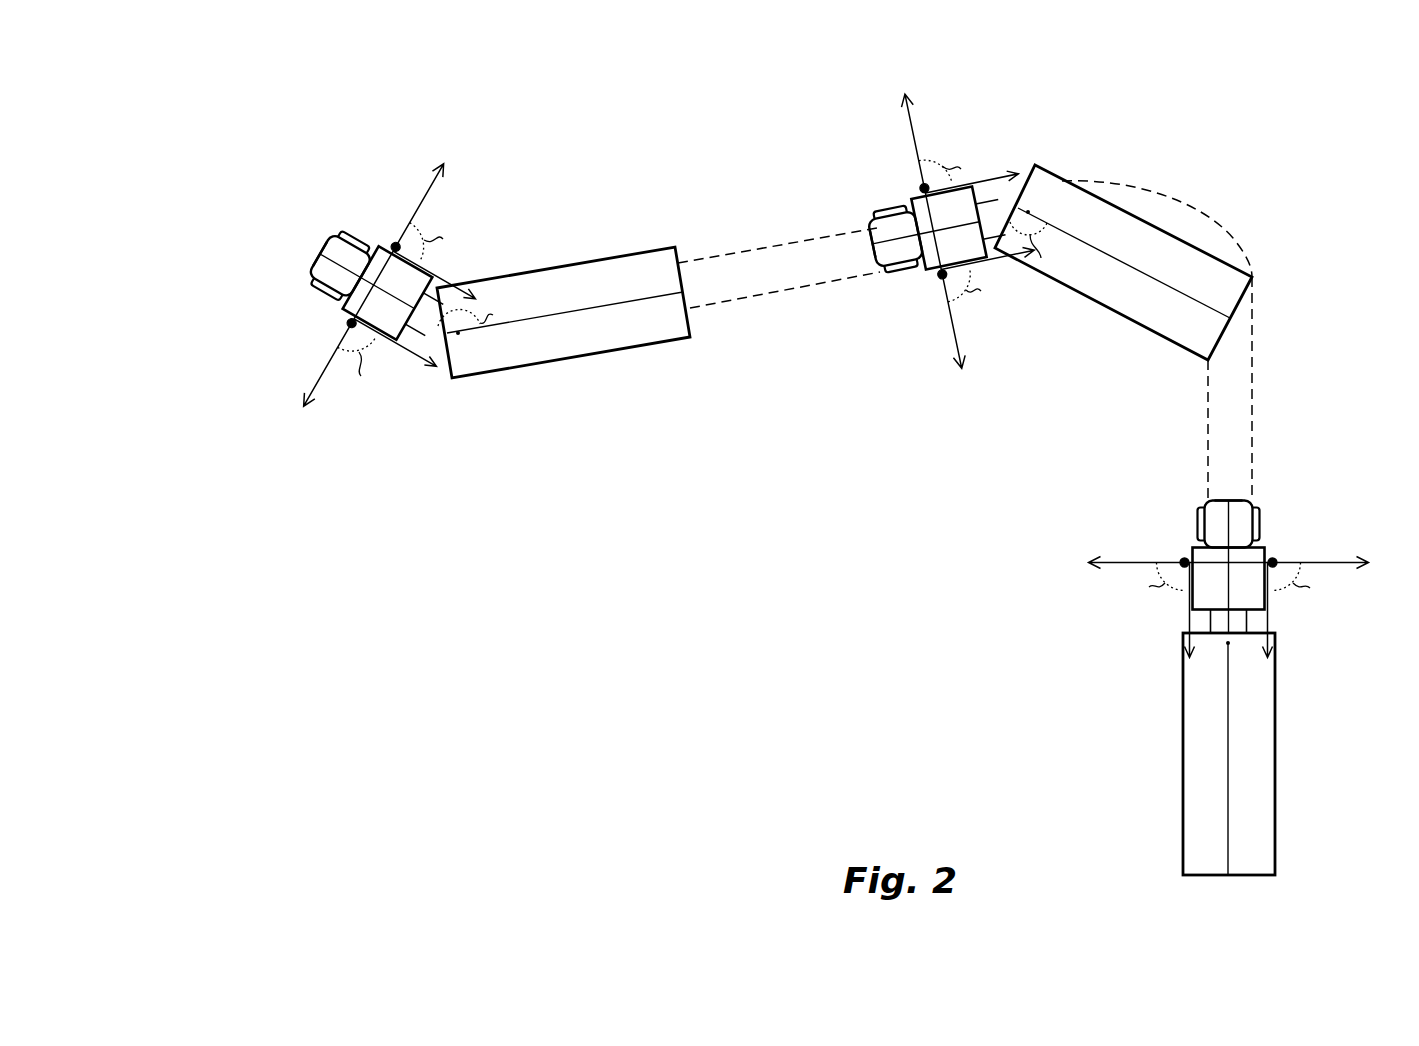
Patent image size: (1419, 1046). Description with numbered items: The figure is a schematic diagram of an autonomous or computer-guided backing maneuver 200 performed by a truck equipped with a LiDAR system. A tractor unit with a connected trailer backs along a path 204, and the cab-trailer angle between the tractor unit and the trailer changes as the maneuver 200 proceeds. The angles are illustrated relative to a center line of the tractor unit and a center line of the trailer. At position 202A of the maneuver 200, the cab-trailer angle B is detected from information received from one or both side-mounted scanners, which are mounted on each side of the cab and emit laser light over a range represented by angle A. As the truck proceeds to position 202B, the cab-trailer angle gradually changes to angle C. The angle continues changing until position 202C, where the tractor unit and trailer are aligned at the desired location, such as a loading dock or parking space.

The backing maneuver 200 is at (257, 125).
The position of the maneuver 202A is at (515, 438).
The position of the maneuver 202B is at (1097, 378).
The position of the maneuver 202C is at (1068, 719).
The path 204 is at (748, 252).